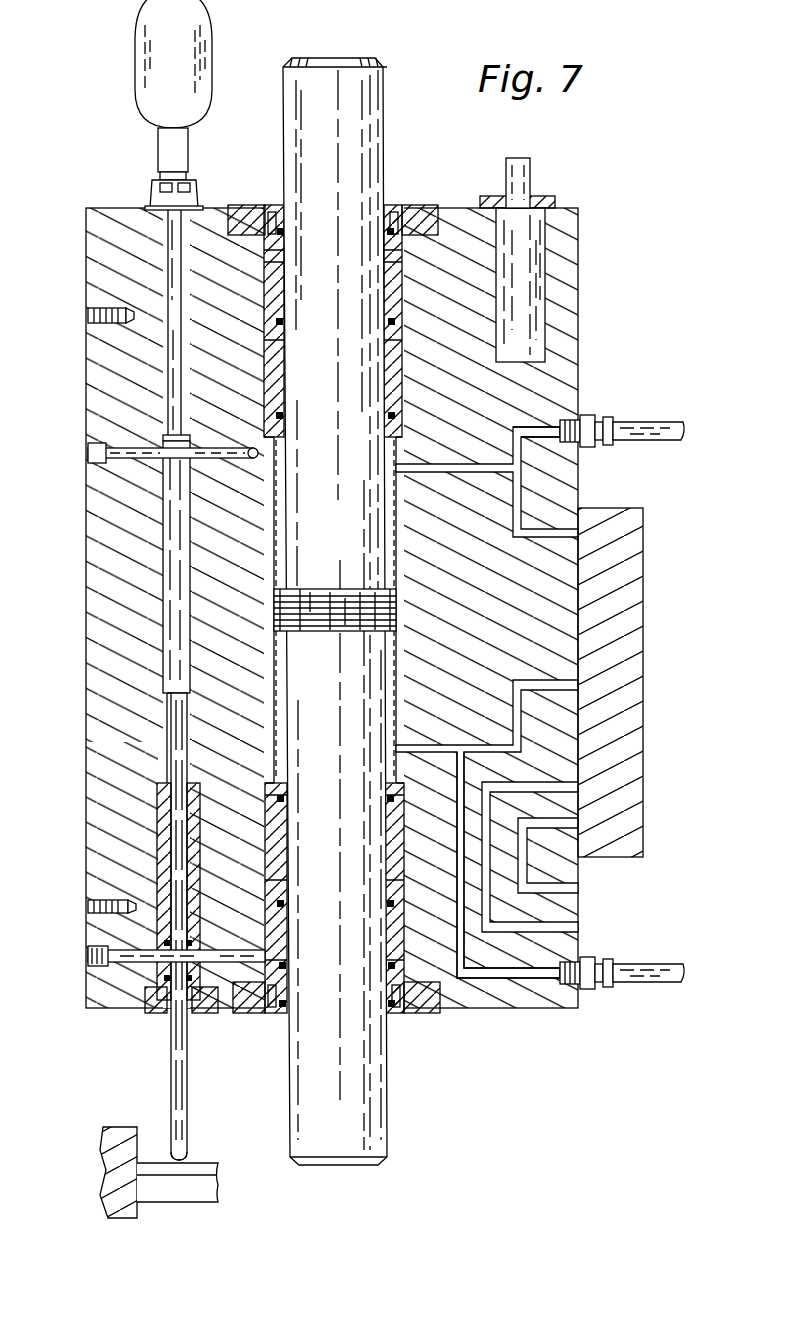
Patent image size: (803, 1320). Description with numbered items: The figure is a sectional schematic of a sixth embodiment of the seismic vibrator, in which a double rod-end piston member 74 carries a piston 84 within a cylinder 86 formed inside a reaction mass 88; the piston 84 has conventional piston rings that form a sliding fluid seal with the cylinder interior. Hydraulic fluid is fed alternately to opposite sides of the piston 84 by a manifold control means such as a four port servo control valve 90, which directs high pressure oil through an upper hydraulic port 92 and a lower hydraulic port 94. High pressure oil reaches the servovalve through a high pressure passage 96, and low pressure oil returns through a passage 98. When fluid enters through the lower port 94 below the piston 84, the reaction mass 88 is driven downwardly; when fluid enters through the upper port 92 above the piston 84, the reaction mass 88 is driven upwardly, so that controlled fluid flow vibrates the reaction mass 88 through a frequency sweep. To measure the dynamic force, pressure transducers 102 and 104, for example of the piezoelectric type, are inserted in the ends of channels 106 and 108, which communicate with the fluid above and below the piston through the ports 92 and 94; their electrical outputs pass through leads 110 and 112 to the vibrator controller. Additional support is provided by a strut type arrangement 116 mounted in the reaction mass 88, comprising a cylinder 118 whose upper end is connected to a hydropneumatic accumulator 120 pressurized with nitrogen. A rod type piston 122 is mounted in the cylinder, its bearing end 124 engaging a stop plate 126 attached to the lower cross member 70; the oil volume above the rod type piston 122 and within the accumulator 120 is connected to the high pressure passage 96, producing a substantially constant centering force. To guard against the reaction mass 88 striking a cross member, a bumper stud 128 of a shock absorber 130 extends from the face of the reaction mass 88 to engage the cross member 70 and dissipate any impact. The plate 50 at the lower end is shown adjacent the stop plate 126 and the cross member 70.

The plate 50 is at (100, 1172).
The lower cross member 70 is at (212, 1185).
The double rod-end piston member 74 is at (384, 138).
The piston 84 is at (326, 632).
The cylinder 86 is at (392, 578).
The reaction mass 88 is at (92, 592).
The four port servo control valve 90 is at (622, 518).
The upper hydraulic port 92 is at (412, 466).
The lower hydraulic port 94 is at (402, 757).
The high pressure passage 96 is at (572, 825).
The low pressure passage 98 is at (572, 788).
The pressure transducer 102 is at (604, 418).
The pressure transducer 104 is at (606, 990).
The channel 106 is at (545, 428).
The channel 108 is at (462, 912).
The lead 110 is at (664, 440).
The lead 112 is at (666, 985).
The strut type arrangement 116 is at (158, 488).
The cylinder 118 is at (162, 538).
The hydropneumatic accumulator 120 is at (136, 42).
The rod type piston 122 is at (165, 740).
The bearing end 124 is at (190, 1150).
The stop plate 126 is at (155, 1160).
The bumper stud 128 is at (521, 172).
The shock absorber 130 is at (528, 275).